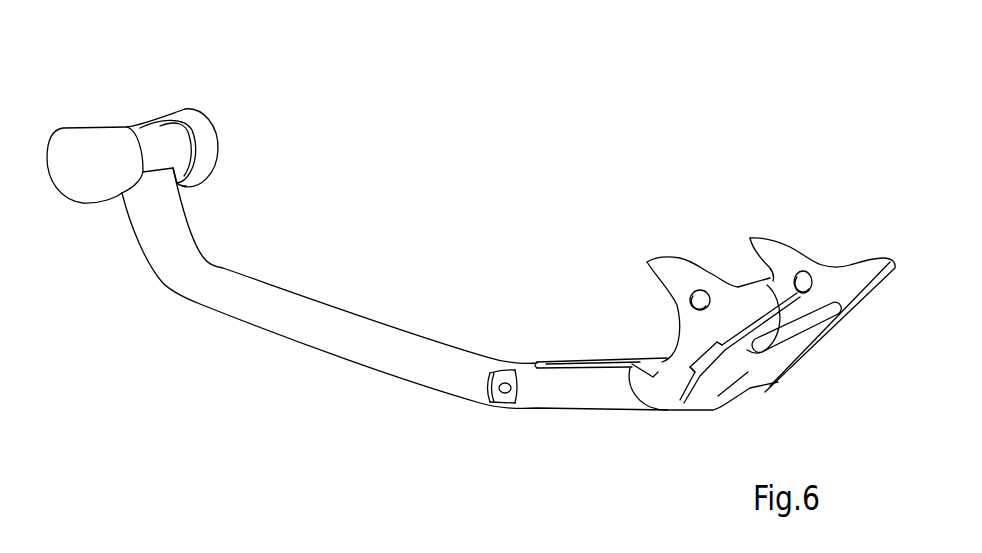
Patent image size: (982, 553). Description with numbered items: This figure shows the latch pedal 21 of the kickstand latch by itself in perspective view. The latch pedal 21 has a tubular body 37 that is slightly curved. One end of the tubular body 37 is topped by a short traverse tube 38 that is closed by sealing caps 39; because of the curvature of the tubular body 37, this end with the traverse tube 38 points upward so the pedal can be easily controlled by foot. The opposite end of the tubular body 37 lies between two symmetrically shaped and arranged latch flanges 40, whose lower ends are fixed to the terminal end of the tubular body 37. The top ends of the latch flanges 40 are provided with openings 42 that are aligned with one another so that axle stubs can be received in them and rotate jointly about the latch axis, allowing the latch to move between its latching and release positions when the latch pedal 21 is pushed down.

The latch pedal 21 is at (303, 308).
The tubular body 37 is at (467, 387).
The traverse tube 38 is at (165, 147).
The sealing caps 39 is at (188, 120).
The latch flanges 40 is at (763, 237).
The openings 42 is at (647, 390).